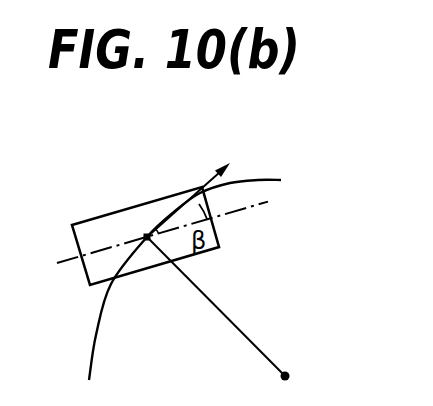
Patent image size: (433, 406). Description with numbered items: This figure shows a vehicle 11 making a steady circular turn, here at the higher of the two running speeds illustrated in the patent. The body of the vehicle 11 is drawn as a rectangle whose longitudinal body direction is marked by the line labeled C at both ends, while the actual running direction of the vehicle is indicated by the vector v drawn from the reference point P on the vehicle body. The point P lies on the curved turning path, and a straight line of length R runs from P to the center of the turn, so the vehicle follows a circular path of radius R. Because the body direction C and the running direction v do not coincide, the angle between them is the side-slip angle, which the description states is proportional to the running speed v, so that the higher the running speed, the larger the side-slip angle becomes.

The vehicle 11 is at (140, 205).
The reference point on vehicle P is at (141, 226).
The longitudinal axis of vehicle C is at (163, 233).
The turning radius R is at (218, 309).
The running direction vector v is at (196, 191).